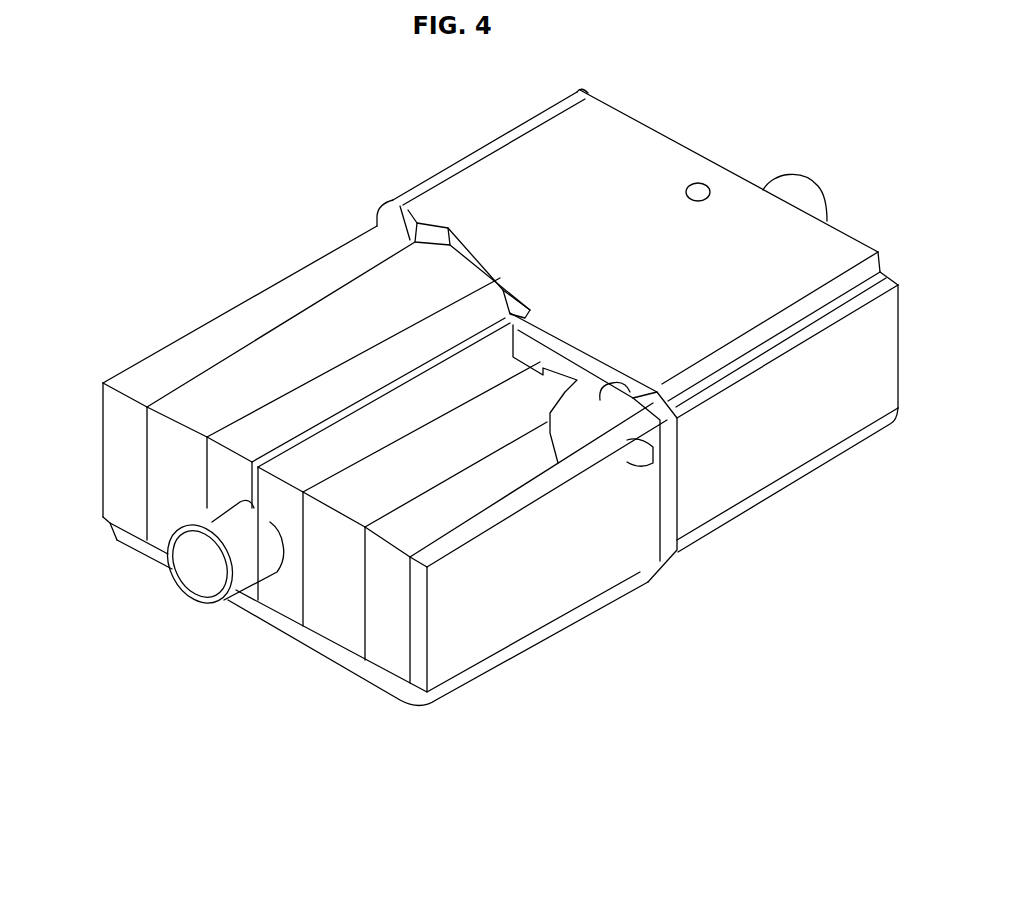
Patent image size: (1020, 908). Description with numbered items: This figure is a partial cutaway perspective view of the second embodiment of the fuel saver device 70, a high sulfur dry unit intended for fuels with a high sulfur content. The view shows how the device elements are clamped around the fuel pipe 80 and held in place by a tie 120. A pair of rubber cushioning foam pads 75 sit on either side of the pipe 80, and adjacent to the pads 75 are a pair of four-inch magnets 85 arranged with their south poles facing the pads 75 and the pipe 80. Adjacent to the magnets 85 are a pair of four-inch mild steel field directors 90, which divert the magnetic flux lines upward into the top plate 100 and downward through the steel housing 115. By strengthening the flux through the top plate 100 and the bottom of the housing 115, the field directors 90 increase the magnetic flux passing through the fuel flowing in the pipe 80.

The fuel saver device 70 is at (701, 104).
The rubber cushioning foam pads 75 is at (297, 407).
The fuel pipe 80 is at (217, 603).
The magnets 85 is at (400, 293).
The mild steel field directors 90 is at (283, 308).
The top plate 100 is at (567, 153).
The steel housing 115 is at (775, 428).
The tie 120 is at (673, 550).